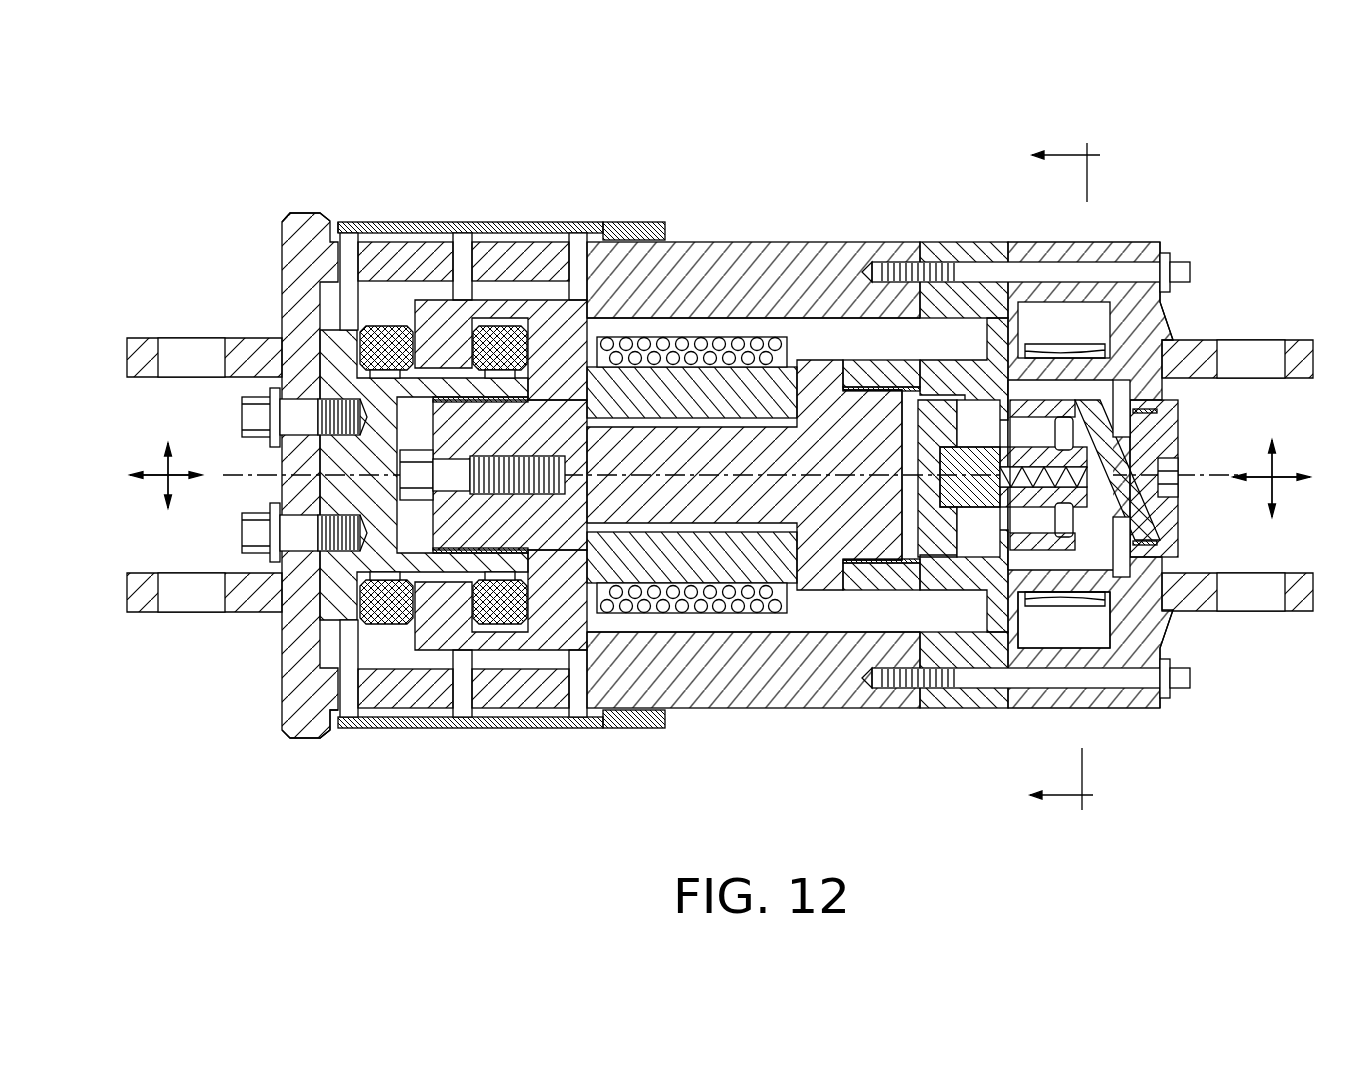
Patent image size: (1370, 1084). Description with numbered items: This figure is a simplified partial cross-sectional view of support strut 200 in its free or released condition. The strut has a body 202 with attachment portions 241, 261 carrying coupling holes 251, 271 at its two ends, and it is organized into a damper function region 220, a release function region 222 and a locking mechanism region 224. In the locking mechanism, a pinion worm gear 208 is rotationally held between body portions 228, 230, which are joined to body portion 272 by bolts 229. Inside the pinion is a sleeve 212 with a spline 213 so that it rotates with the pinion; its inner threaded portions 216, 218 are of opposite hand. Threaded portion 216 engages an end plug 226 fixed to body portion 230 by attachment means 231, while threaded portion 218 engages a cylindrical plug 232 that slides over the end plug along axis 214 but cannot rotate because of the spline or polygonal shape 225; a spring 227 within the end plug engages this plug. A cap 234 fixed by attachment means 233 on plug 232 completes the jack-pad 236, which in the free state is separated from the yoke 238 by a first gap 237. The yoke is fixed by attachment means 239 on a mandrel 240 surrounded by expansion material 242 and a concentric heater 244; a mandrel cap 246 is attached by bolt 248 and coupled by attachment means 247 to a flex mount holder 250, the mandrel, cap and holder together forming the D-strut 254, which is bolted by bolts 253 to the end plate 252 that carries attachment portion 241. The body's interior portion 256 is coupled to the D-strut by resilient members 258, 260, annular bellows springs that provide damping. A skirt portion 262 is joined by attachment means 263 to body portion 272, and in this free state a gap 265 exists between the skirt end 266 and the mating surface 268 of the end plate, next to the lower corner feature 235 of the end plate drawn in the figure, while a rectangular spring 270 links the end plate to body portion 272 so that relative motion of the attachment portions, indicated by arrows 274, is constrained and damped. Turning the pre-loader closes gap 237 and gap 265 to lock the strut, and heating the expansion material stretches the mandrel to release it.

The support strut 200 is at (553, 822).
The body 202 is at (855, 192).
The pinion worm gear 208 is at (1035, 380).
The sleeve 212 is at (1150, 390).
The spline 213 is at (1073, 444).
The axis 214 is at (248, 475).
The threaded portion 216 is at (1160, 435).
The threaded portion 218 is at (1057, 383).
The damper function region 220 is at (452, 182).
The release function region 222 is at (765, 162).
The locking mechanism region 224 is at (1068, 138).
The spline or polygonal shape 225 is at (1027, 613).
The end plug 226 is at (1165, 425).
The spring 227 is at (1178, 505).
The body portion 228 is at (955, 250).
The bolts 229 is at (1074, 476).
The body portion 230 is at (1150, 243).
The attachment means 231 is at (1153, 533).
The cylindrical plug 232 is at (925, 462).
The attachment means 233 is at (940, 420).
The cap 234 is at (930, 528).
The step 235 is at (332, 728).
The jack-pad 236 is at (937, 384).
The first gap 237 is at (963, 400).
The yoke 238 is at (925, 578).
The attachment means 239 is at (872, 592).
The mandrel 240 is at (758, 558).
The attachment portion 241 is at (204, 475).
The expansion material 242 is at (765, 365).
The heater 244 is at (723, 345).
The mandrel cap 246 is at (602, 315).
The attachment means 247 is at (510, 560).
The bolt 248 is at (592, 392).
The flex mount holder 250 is at (337, 496).
The coupling hole 251 is at (190, 345).
The end plate 252 is at (292, 263).
The bolts 253 is at (247, 413).
The D-strut 254 is at (360, 770).
The interior portion 256 is at (430, 312).
The resilient member 258 is at (385, 622).
The resilient member 260 is at (507, 615).
The attachment portion 261 is at (1237, 478).
The skirt portion 262 is at (593, 224).
The attachment means 263 is at (640, 222).
The gap 265 is at (340, 226).
The end 266 is at (372, 222).
The mating surface 268 is at (300, 222).
The spring 270 is at (527, 250).
The coupling hole 271 is at (1250, 342).
The body portion 272 is at (728, 247).
The arrows 274 is at (160, 480).